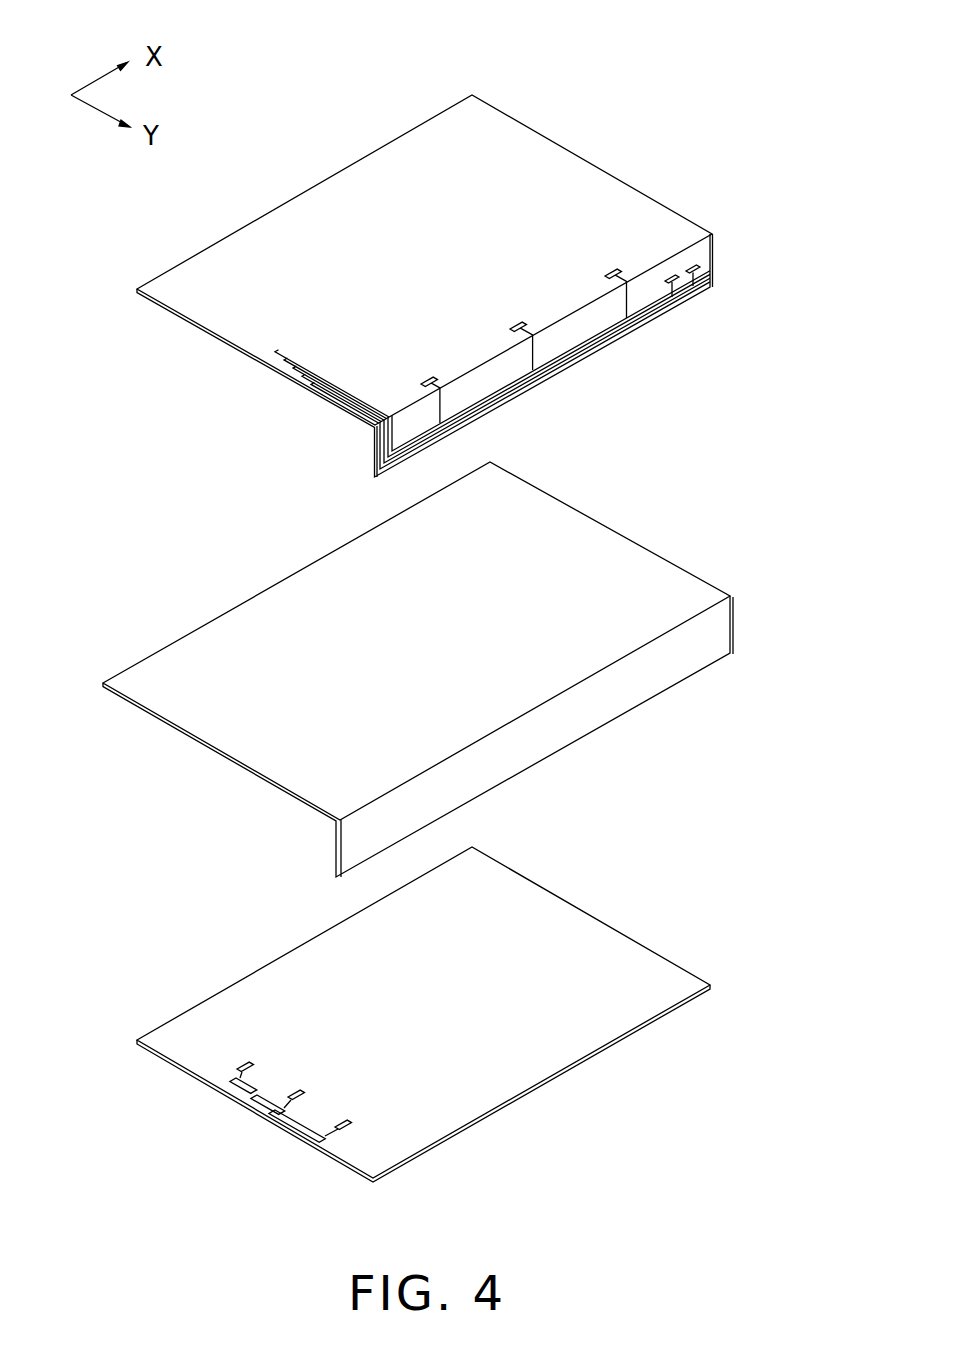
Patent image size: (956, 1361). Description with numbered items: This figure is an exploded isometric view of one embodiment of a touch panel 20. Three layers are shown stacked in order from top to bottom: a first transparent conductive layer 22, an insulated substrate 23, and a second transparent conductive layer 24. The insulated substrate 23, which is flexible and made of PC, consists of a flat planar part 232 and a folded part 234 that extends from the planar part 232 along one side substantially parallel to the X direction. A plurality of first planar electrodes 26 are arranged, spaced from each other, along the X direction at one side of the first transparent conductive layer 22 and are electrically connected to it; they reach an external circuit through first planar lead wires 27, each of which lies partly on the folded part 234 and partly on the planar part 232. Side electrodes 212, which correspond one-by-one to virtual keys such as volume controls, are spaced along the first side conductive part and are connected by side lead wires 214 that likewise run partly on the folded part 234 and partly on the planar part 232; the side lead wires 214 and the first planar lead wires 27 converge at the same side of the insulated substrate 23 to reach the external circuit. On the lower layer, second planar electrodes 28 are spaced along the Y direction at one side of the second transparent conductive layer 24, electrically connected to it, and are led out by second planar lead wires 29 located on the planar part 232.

The touch panel 20 is at (477, 19).
The first transparent conductive layer 22 is at (607, 195).
The first planar electrodes 26 is at (619, 263).
The side electrodes 212 is at (701, 270).
The side lead wires 214 is at (695, 286).
The first planar lead wires 27 is at (272, 353).
The insulated substrate 23 is at (418, 669).
The planar part 232 is at (225, 653).
The folded part 234 is at (617, 705).
The second transparent conductive layer 24 is at (283, 980).
The second planar electrodes 28 is at (243, 1060).
The second planar lead wires 29 is at (238, 1078).